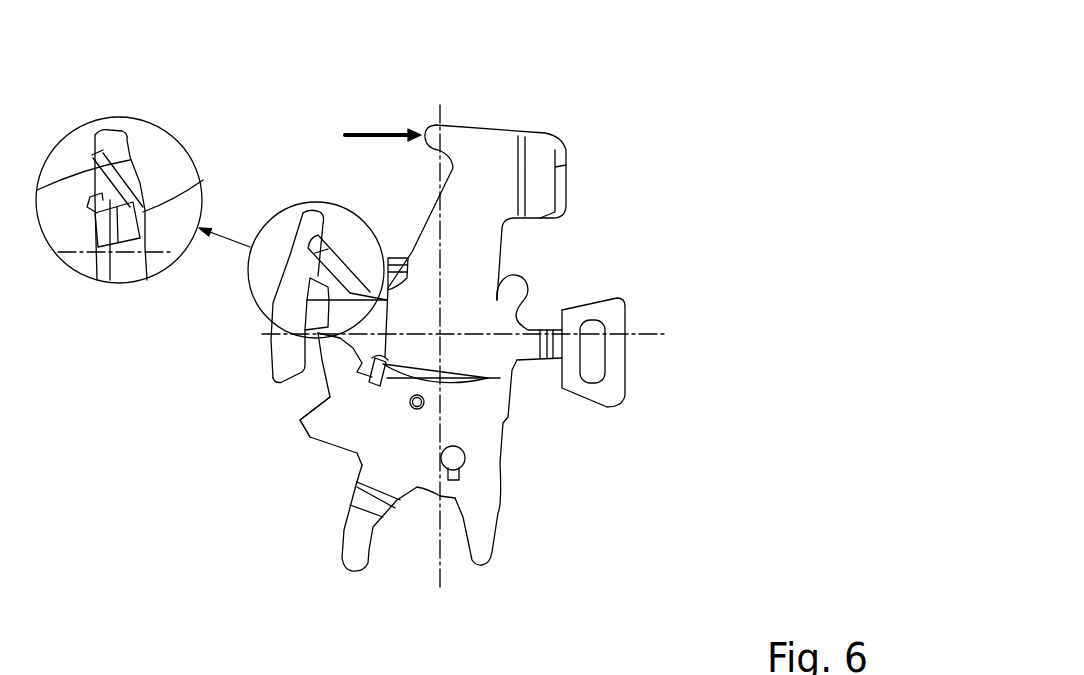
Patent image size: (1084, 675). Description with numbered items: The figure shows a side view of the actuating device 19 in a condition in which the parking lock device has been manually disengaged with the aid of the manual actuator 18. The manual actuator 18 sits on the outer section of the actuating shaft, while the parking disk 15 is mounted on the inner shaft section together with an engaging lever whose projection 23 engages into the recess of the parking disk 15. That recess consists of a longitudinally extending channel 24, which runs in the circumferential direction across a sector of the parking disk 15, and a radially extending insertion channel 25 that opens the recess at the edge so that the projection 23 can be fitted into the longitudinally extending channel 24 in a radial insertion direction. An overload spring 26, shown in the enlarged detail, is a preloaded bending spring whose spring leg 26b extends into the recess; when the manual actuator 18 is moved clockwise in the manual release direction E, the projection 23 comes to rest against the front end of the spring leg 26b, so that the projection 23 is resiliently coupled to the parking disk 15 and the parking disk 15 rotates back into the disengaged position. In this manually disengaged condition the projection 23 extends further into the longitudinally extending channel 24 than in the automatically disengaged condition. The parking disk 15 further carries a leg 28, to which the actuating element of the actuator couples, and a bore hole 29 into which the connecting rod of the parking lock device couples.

The parking disk 15 is at (490, 424).
The manual actuator 18 is at (540, 189).
The actuating device 19 is at (571, 111).
The projection 23 is at (143, 210).
The longitudinally extending channel 24 is at (292, 356).
The insertion channel 25 is at (287, 409).
The overload spring 26 is at (335, 258).
The spring leg 26b is at (141, 148).
The leg 28 is at (355, 555).
The bore hole 29 is at (450, 457).
The manual release direction E is at (360, 133).